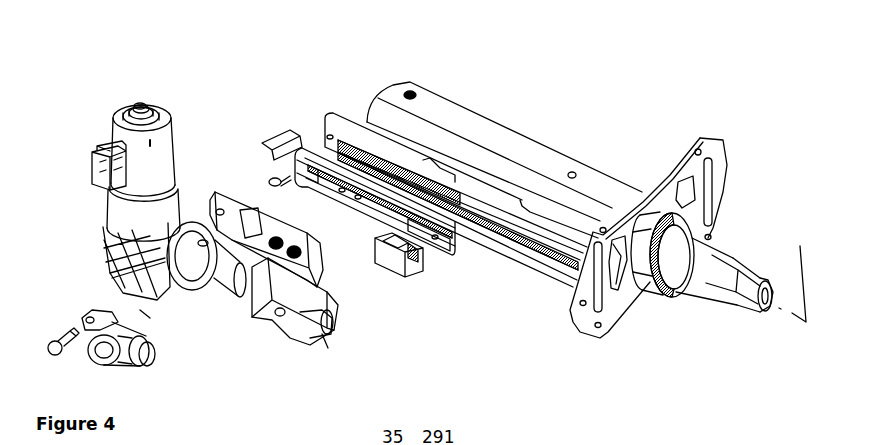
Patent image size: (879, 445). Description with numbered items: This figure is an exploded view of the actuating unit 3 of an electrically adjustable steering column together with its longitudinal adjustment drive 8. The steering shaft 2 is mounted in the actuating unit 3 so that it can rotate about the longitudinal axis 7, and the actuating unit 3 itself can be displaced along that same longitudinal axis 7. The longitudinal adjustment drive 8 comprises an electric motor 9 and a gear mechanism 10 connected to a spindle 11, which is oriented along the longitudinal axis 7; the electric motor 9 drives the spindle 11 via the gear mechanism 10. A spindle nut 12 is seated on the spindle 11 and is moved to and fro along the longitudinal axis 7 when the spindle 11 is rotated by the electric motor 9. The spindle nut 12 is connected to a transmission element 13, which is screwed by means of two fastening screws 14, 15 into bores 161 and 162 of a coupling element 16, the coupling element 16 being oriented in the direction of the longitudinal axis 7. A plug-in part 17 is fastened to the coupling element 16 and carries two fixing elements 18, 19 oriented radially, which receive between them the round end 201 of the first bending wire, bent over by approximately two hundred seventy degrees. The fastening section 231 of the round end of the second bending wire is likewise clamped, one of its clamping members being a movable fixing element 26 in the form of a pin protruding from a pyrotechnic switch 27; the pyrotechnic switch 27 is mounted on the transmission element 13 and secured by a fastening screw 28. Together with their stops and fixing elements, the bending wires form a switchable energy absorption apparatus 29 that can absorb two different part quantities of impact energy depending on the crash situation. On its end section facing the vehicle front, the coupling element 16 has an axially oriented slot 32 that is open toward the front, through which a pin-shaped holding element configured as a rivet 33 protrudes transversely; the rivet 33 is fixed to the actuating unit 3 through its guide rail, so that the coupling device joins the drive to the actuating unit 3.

The steering shaft 2 is at (702, 258).
The actuating unit 3 is at (545, 158).
The longitudinal axis 7 is at (793, 273).
The longitudinal adjustment drive 8 is at (77, 226).
The electric motor 9 is at (122, 208).
The gear mechanism 10 is at (120, 267).
The spindle 11 is at (255, 255).
The spindle nut 12 is at (247, 297).
The transmission element 13 is at (298, 290).
The fastening screw 14 is at (260, 307).
The fastening screw 15 is at (293, 270).
The coupling element 16 is at (458, 248).
The plug-in part 17 is at (401, 262).
The fixing element 18 is at (392, 250).
The fixing element 19 is at (423, 255).
The movable fixing element 26 is at (147, 316).
The pyrotechnic switch 27 is at (100, 376).
The fastening screw 28 is at (72, 333).
The switchable energy absorption apparatus 29 is at (465, 190).
The slot 32 is at (273, 150).
The rivet 33 is at (275, 177).
The bore 161 is at (340, 163).
The bore 162 is at (365, 182).
The round end 201 is at (485, 196).
The fastening section 231 is at (380, 120).